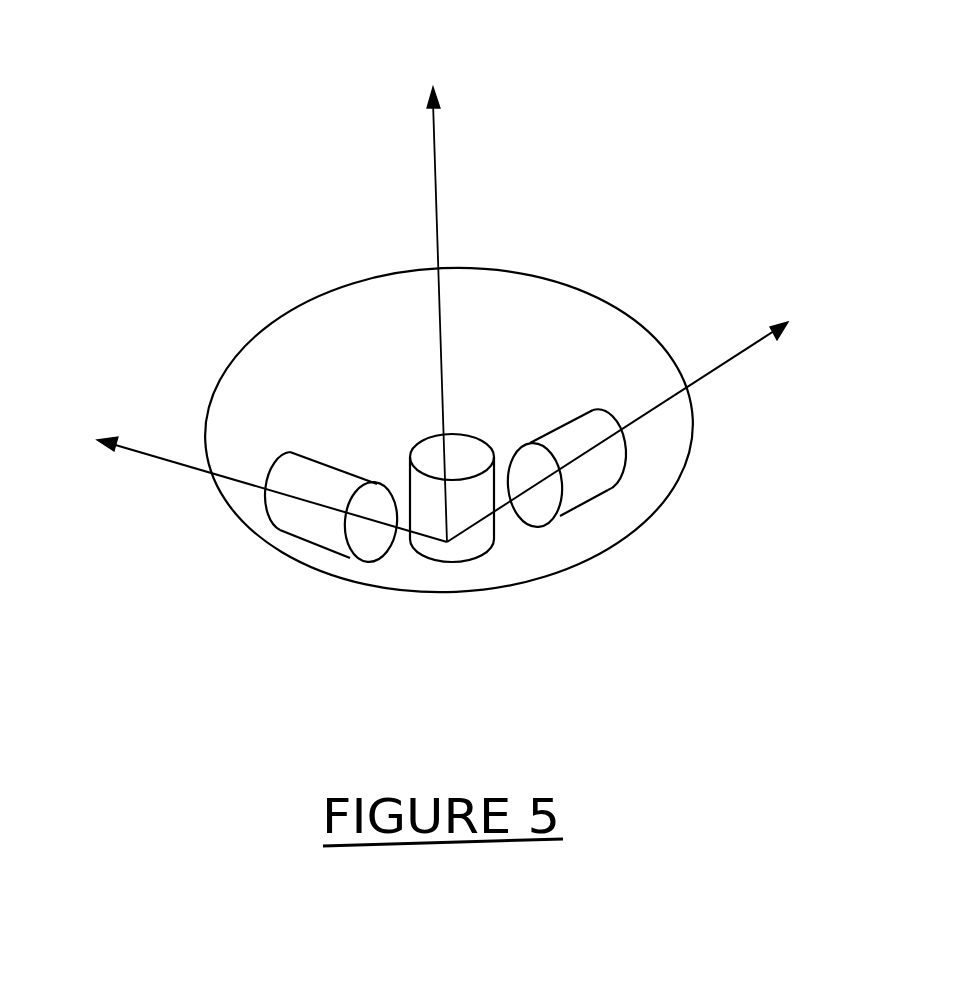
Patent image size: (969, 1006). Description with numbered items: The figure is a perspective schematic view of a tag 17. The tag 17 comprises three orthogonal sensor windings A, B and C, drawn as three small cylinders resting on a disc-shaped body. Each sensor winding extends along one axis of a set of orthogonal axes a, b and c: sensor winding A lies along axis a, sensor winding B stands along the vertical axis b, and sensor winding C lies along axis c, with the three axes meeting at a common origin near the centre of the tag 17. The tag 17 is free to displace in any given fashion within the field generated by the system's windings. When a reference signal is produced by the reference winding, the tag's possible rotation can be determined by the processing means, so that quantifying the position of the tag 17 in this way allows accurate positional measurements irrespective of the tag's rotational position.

The tag 17 is at (298, 248).
The sensor winding A is at (328, 532).
The sensor winding B is at (477, 542).
The sensor winding C is at (577, 490).
The orthogonal axis a is at (240, 472).
The orthogonal axis b is at (433, 286).
The orthogonal axis c is at (647, 414).